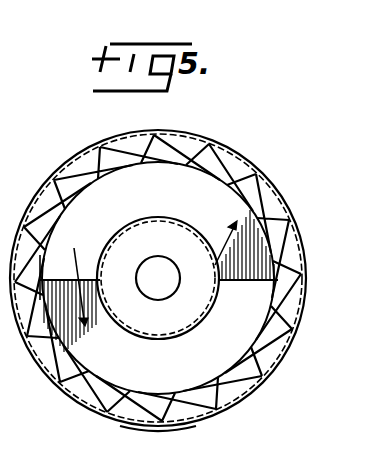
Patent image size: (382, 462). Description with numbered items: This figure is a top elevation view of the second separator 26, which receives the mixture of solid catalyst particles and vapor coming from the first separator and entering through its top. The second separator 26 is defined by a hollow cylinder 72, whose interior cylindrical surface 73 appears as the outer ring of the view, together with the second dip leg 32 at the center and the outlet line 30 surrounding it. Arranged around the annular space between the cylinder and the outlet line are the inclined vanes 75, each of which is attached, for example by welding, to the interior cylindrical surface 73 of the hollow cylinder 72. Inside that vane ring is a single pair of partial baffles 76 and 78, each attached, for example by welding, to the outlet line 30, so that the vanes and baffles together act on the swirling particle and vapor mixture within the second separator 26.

The second separator 26 is at (272, 171).
The outlet line 30 is at (155, 340).
The second dip leg 32 is at (143, 290).
The hollow cylinder 72 is at (97, 417).
The interior cylindrical surface 73 is at (141, 426).
The inclined vanes 75 is at (112, 148).
The partial baffle 76 is at (190, 180).
The partial baffle 78 is at (226, 400).